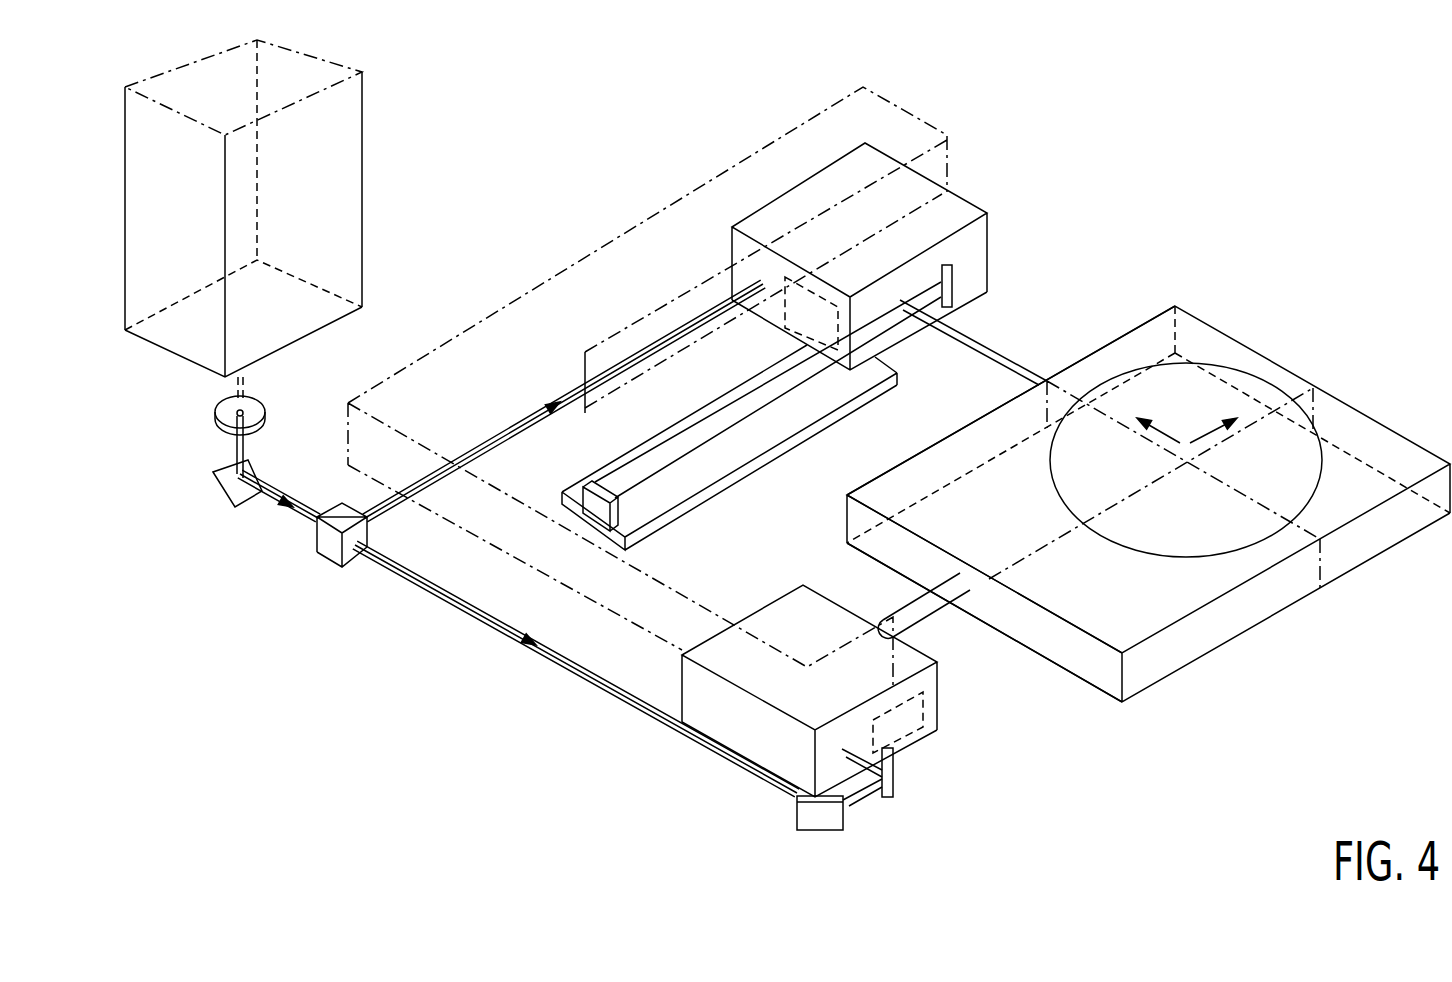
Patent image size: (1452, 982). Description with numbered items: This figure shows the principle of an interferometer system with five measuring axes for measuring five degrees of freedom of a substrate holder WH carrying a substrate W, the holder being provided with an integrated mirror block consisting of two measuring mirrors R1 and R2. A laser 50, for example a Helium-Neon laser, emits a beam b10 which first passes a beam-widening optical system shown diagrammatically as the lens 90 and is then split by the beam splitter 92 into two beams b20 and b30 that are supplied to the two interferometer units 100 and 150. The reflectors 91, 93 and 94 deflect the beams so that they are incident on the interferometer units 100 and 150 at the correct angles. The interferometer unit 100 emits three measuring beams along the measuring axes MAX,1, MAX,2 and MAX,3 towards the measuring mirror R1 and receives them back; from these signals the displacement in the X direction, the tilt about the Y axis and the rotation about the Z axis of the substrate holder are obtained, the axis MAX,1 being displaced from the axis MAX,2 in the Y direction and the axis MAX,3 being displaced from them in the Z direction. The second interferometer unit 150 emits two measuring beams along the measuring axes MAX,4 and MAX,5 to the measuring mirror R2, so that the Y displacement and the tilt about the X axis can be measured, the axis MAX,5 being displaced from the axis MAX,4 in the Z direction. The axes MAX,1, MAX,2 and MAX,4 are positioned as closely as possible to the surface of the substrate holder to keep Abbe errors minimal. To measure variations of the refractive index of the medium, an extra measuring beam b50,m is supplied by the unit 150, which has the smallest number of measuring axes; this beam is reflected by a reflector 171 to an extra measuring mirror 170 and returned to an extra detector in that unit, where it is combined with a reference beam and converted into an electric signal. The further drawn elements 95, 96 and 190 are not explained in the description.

The laser 50 is at (350, 148).
The lens 90 is at (222, 413).
The reflector 91 is at (237, 495).
The beam splitter 92 is at (330, 552).
The reflector 93 is at (830, 823).
The reflector 94 is at (888, 800).
The detector window 95 is at (923, 742).
The window 96 is at (783, 328).
The interferometer unit 100 is at (702, 718).
The second interferometer unit 150 is at (968, 212).
The extra measuring mirror 170 is at (603, 512).
The reflector 171 is at (952, 282).
The stage bar 190 is at (798, 440).
The laser beam b10 is at (293, 518).
The beam b20 is at (538, 655).
The beam b30 is at (487, 440).
The extra measuring beam b50,m is at (660, 457).
The measuring axis MAX,1 is at (903, 603).
The measuring axis MAX,2 is at (940, 637).
The measuring axis MAX,3 is at (880, 628).
The measuring axis MAX,4 is at (995, 352).
The measuring axis MAX,5 is at (970, 357).
The measuring mirror R1 is at (1094, 673).
The measuring mirror R2 is at (1127, 330).
The substrate wafer W is at (1193, 377).
The substrate holder WH is at (1148, 502).